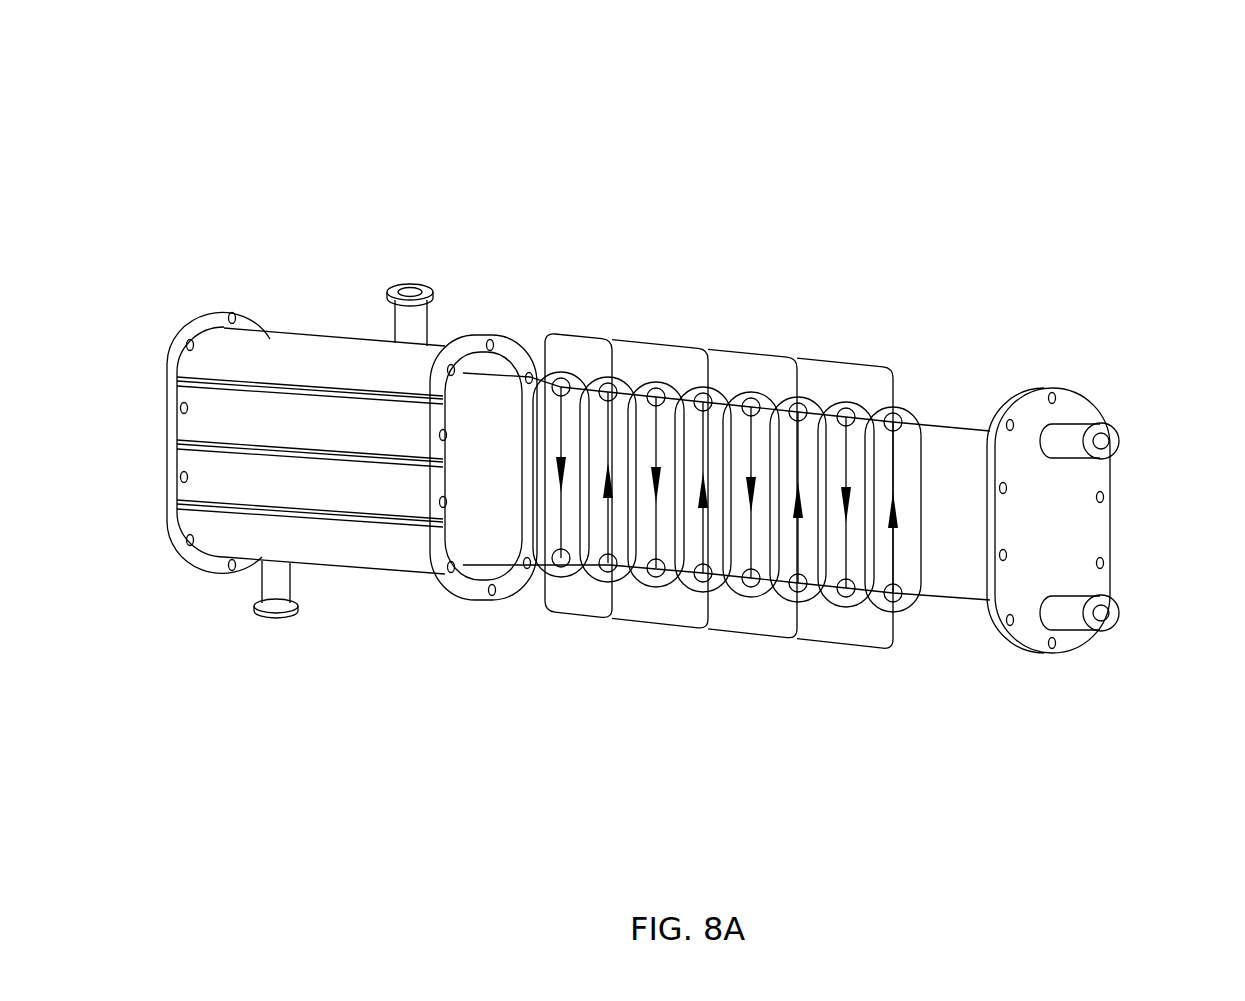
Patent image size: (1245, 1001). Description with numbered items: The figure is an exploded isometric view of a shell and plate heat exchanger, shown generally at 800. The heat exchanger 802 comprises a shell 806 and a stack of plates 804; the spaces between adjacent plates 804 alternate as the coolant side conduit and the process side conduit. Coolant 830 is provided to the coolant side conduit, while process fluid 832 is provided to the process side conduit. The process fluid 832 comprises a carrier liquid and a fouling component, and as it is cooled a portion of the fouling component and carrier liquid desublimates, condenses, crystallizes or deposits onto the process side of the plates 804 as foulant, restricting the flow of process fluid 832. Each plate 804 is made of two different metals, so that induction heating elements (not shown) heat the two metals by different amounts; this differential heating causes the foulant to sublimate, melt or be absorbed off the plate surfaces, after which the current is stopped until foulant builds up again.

The exploded isometric view of a shell and plate heat exchanger 800 is at (170, 82).
The heat exchanger 802 is at (222, 312).
The plates 804 is at (908, 412).
The shell 806 is at (315, 330).
The coolant 830 is at (408, 277).
The process fluid 832 is at (1138, 445).